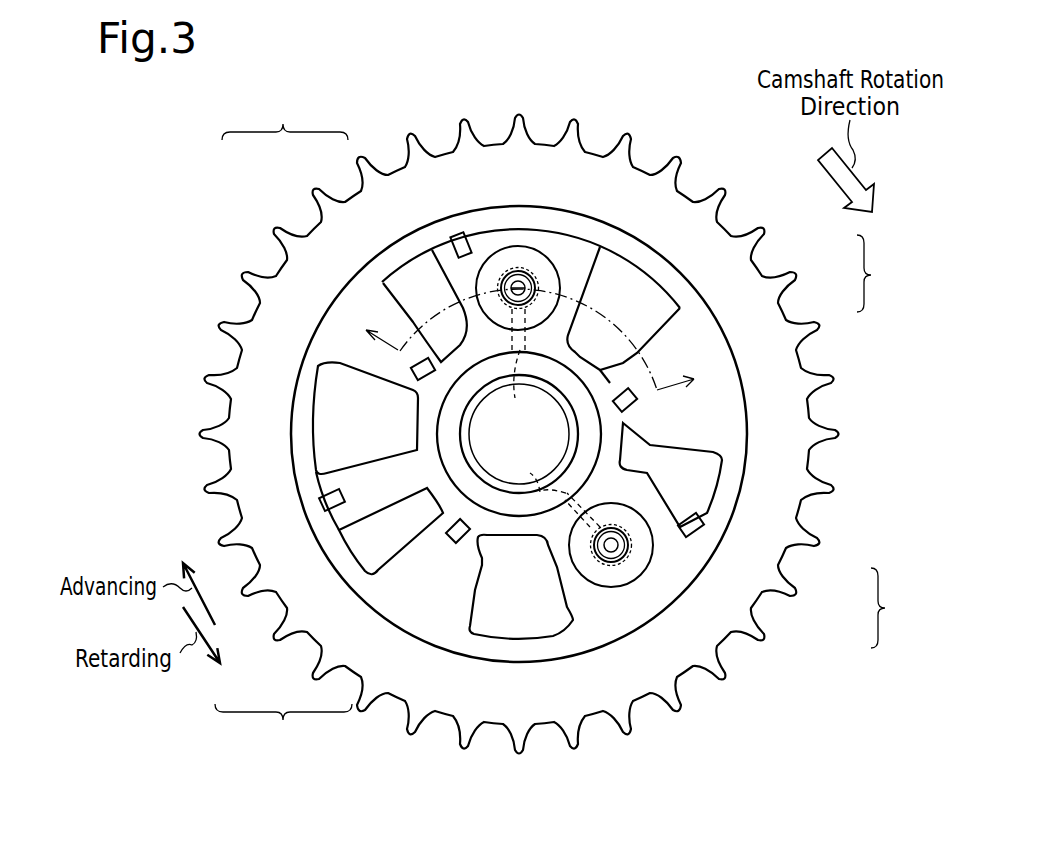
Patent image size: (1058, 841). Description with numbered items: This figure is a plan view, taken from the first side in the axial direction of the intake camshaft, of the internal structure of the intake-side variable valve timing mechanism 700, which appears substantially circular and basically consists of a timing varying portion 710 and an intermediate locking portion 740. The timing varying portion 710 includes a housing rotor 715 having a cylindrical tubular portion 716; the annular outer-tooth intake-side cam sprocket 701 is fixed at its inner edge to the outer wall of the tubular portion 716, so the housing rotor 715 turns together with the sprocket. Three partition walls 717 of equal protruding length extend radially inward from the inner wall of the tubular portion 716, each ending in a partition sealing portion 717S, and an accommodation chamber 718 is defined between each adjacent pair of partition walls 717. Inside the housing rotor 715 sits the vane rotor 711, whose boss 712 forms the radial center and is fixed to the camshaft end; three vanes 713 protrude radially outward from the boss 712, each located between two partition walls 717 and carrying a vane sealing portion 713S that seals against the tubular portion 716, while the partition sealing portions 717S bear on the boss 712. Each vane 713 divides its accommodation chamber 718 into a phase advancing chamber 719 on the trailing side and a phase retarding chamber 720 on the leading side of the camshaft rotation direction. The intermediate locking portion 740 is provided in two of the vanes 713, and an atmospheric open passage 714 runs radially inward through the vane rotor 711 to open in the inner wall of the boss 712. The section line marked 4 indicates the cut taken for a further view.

The intake-side variable valve timing mechanism 700 is at (888, 273).
The intake-side cam sprocket 701 is at (586, 177).
The timing varying portion 710 is at (738, 327).
The vane rotor 711 is at (283, 728).
The boss 712 is at (567, 575).
The vane 713 is at (502, 234).
The vane sealing portion 713S is at (458, 236).
The atmospheric open passage 714 is at (519, 434).
The housing rotor 715 is at (285, 118).
The tubular portion 716 is at (413, 240).
The partition wall 717 is at (378, 308).
The partition sealing portion 717S is at (413, 365).
The accommodation chamber 718 is at (902, 608).
The phase advancing chamber 719 is at (450, 306).
The phase retarding chamber 720 is at (659, 311).
The intermediate locking portion 740 is at (527, 260).
The section line 4- 4 is at (532, 341).